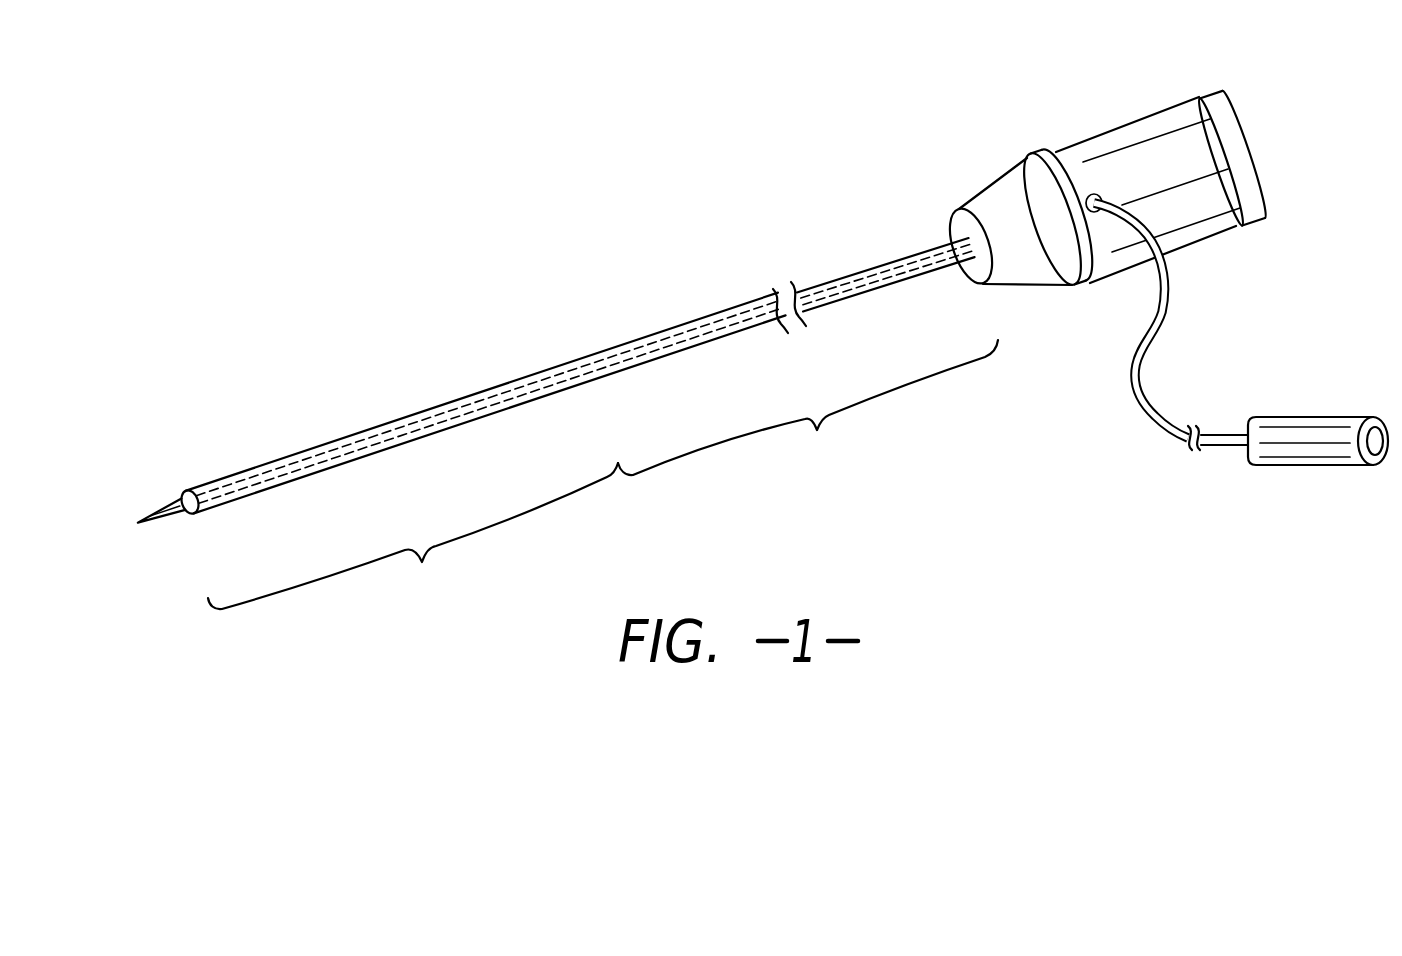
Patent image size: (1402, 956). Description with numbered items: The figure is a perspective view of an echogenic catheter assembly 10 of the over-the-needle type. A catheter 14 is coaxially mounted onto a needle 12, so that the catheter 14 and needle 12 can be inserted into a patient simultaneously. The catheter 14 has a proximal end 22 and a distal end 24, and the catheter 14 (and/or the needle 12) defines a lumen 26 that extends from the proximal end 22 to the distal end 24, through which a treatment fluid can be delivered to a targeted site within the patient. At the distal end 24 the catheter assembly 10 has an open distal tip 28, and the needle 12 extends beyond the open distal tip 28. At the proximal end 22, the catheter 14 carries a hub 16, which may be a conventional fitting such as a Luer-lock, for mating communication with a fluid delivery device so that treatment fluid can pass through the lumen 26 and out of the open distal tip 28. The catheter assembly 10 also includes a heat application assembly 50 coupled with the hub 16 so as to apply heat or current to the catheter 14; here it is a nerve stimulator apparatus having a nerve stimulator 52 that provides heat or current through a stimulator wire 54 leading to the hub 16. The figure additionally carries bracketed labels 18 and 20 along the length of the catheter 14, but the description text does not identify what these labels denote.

The echogenic catheter assembly 10 is at (398, 193).
The needle 12 is at (160, 538).
The catheter 14 is at (608, 384).
The hub 16 is at (1128, 114).
The distal portion of cannula 18 is at (413, 536).
The proximal portion of cannula 20 is at (808, 409).
The proximal end 22 is at (947, 264).
The distal end 24 is at (186, 492).
The lumen 26 is at (720, 313).
The open distal tip 28 is at (181, 516).
The heat application assembly 50 is at (1264, 378).
The nerve stimulator 52 is at (1311, 468).
The stimulator wire 54 is at (1141, 399).